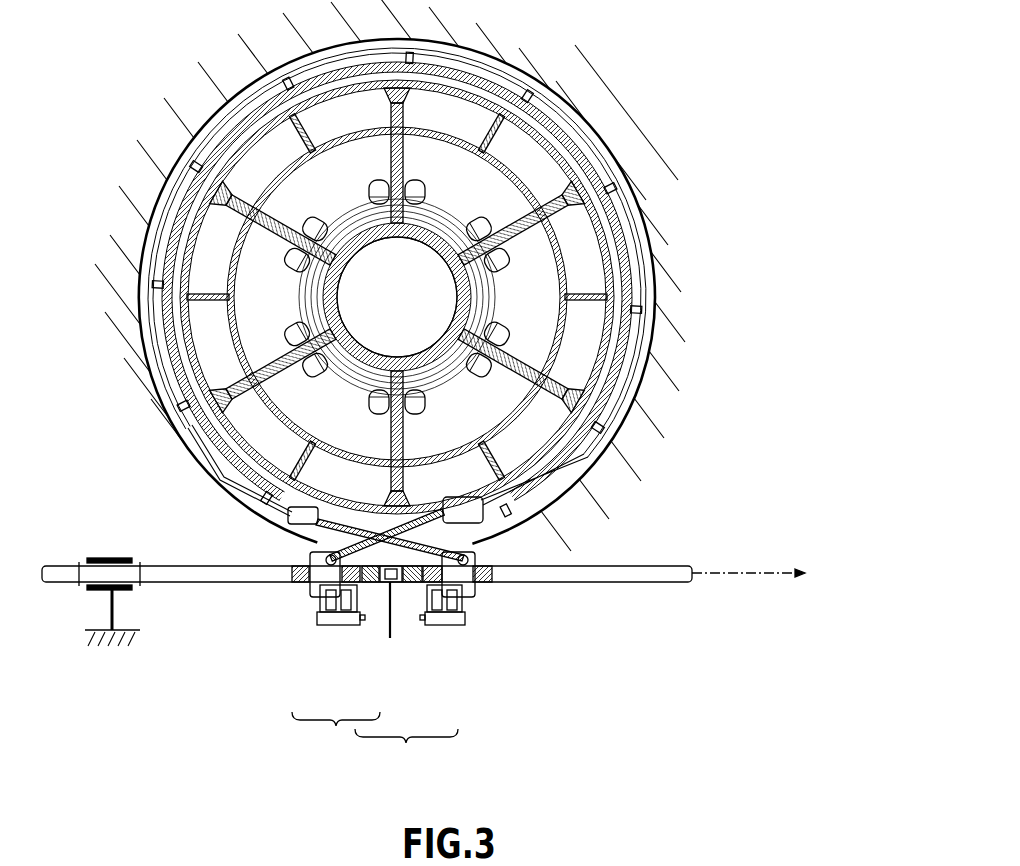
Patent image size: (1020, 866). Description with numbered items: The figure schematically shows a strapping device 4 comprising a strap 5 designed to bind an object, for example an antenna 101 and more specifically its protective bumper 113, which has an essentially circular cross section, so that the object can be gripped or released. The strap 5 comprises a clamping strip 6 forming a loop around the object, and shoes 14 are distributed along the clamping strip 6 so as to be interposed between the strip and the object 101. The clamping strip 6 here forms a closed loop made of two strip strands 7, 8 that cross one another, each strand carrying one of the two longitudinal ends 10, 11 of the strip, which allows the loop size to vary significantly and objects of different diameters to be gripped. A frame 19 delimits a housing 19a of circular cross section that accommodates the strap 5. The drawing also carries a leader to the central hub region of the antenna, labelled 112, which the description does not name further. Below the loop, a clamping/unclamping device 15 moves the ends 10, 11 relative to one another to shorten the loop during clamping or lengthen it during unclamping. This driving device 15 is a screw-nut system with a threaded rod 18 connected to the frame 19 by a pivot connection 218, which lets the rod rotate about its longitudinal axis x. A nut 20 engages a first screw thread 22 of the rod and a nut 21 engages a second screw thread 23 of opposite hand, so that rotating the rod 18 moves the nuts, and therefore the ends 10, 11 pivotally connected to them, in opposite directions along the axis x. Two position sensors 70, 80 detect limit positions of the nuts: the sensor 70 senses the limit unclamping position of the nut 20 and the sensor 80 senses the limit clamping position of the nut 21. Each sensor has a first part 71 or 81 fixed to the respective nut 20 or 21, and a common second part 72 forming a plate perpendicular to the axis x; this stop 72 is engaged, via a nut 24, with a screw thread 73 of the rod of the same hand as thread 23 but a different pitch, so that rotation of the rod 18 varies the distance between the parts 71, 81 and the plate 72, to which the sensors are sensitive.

The strapping device 4 is at (333, 297).
The strap 5 is at (340, 297).
The clamping strip 6 is at (344, 281).
The strip strand 7 is at (497, 490).
The strip strand 8 is at (315, 517).
The first end of the clamping strip 10 is at (325, 556).
The second end of the clamping strip 11 is at (470, 556).
The shoes 14 is at (357, 252).
The clamping/unclamping device 15 is at (480, 675).
The threaded rod 18 is at (213, 583).
The frame 19 is at (560, 45).
The housing 19a is at (600, 143).
The nut 20 is at (318, 593).
The nut 21 is at (478, 602).
The first screw thread 22 is at (293, 585).
The second screw thread 23 is at (485, 583).
The nut 24 is at (382, 598).
The position sensor 70 is at (336, 685).
The first part of position sensor 71 is at (325, 622).
The second part (stop) 72 is at (390, 626).
The screw thread 73 is at (408, 585).
The position sensor 80 is at (410, 692).
The first part of position sensor 81 is at (440, 622).
The antenna 101 is at (345, 254).
The hub 112 is at (339, 297).
The protective bumper 113 is at (397, 264).
The pivot connection 218 is at (115, 558).